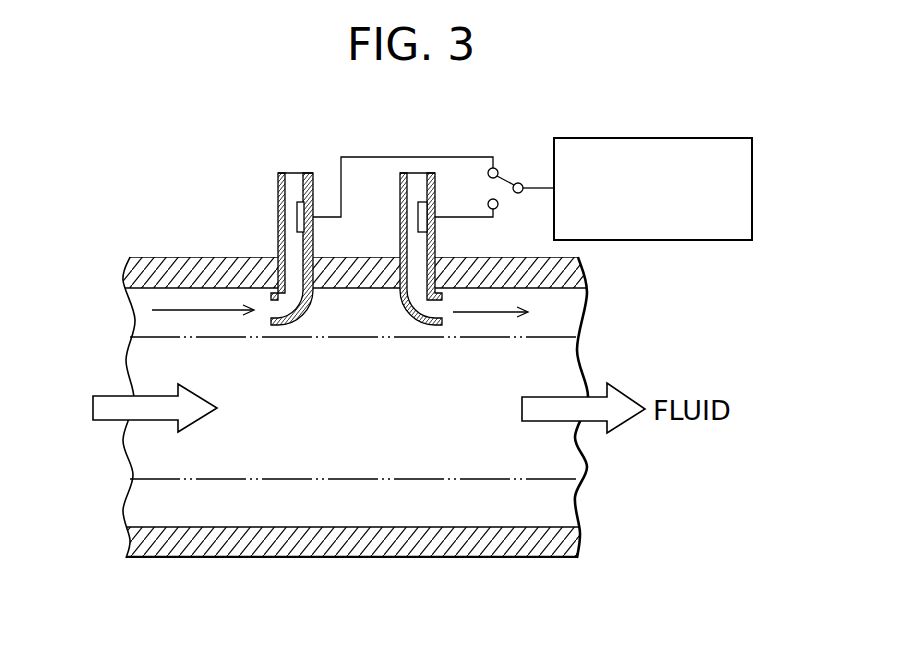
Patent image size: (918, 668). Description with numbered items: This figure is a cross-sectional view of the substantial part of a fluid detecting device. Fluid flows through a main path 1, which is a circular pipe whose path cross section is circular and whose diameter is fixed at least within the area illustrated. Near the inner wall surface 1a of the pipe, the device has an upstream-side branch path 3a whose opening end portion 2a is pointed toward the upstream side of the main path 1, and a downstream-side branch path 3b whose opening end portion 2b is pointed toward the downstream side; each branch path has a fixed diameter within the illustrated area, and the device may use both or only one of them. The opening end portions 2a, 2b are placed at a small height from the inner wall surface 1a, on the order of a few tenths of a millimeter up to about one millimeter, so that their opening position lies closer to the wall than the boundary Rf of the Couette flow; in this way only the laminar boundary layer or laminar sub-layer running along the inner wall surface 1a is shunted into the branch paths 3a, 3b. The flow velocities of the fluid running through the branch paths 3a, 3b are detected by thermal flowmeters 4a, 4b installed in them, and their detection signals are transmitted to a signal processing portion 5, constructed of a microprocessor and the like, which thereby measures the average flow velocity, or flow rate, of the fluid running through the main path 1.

The main path 1 is at (565, 313).
The inner wall surface 1a is at (172, 288).
The opening end portion 2a is at (272, 307).
The opening end portion 2b is at (438, 310).
The upstream-side branch path 3a is at (262, 240).
The downstream-side branch path 3b is at (454, 216).
The thermal flowmeter 4a is at (305, 225).
The thermal flowmeter 4b is at (418, 213).
The signal processing portion 5 is at (710, 138).
The boundary of the Couette flow Rf is at (458, 338).